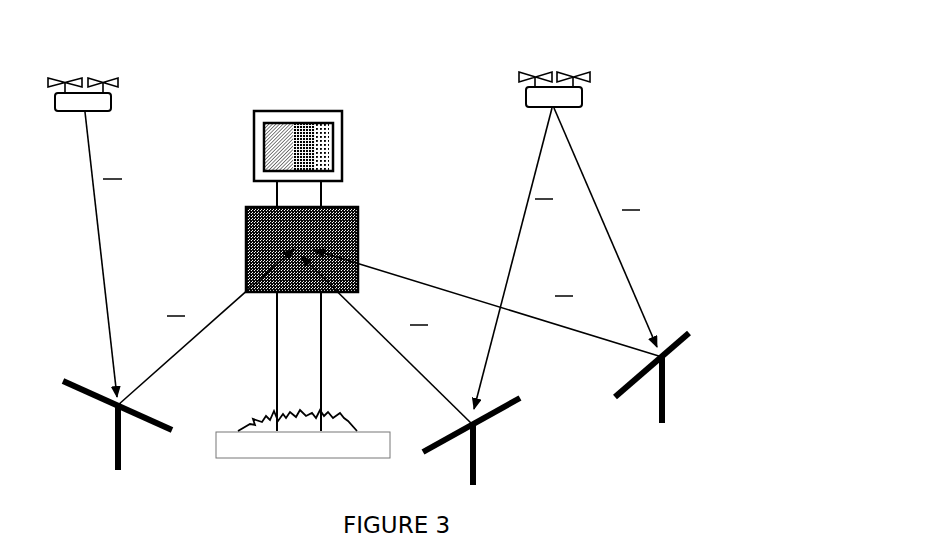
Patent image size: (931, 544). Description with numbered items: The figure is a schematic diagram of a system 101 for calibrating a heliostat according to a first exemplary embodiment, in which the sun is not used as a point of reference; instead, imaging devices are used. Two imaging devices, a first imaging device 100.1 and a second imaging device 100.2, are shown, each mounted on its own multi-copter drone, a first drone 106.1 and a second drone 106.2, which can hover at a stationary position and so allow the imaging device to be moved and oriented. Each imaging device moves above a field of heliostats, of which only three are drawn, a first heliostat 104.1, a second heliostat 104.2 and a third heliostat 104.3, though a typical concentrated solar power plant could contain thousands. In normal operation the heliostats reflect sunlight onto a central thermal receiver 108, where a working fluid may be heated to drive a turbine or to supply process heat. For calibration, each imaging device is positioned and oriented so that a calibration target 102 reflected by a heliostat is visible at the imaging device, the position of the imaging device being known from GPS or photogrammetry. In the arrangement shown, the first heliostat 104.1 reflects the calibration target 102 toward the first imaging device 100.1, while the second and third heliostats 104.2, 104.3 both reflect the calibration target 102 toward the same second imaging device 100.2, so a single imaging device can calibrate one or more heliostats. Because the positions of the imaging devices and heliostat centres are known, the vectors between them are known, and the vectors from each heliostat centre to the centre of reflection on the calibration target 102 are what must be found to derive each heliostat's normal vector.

The system for calibrating a heliostat 101 is at (683, 53).
The first imaging device 100.1 is at (111, 106).
The second imaging device 100.2 is at (574, 100).
The first drone 106.1 is at (65, 72).
The second drone 106.2 is at (549, 62).
The calibration target 102 is at (350, 233).
The central thermal receiver 108 is at (320, 121).
The first heliostat 104.1 is at (121, 454).
The second heliostat 104.2 is at (476, 463).
The third heliostat 104.3 is at (665, 410).